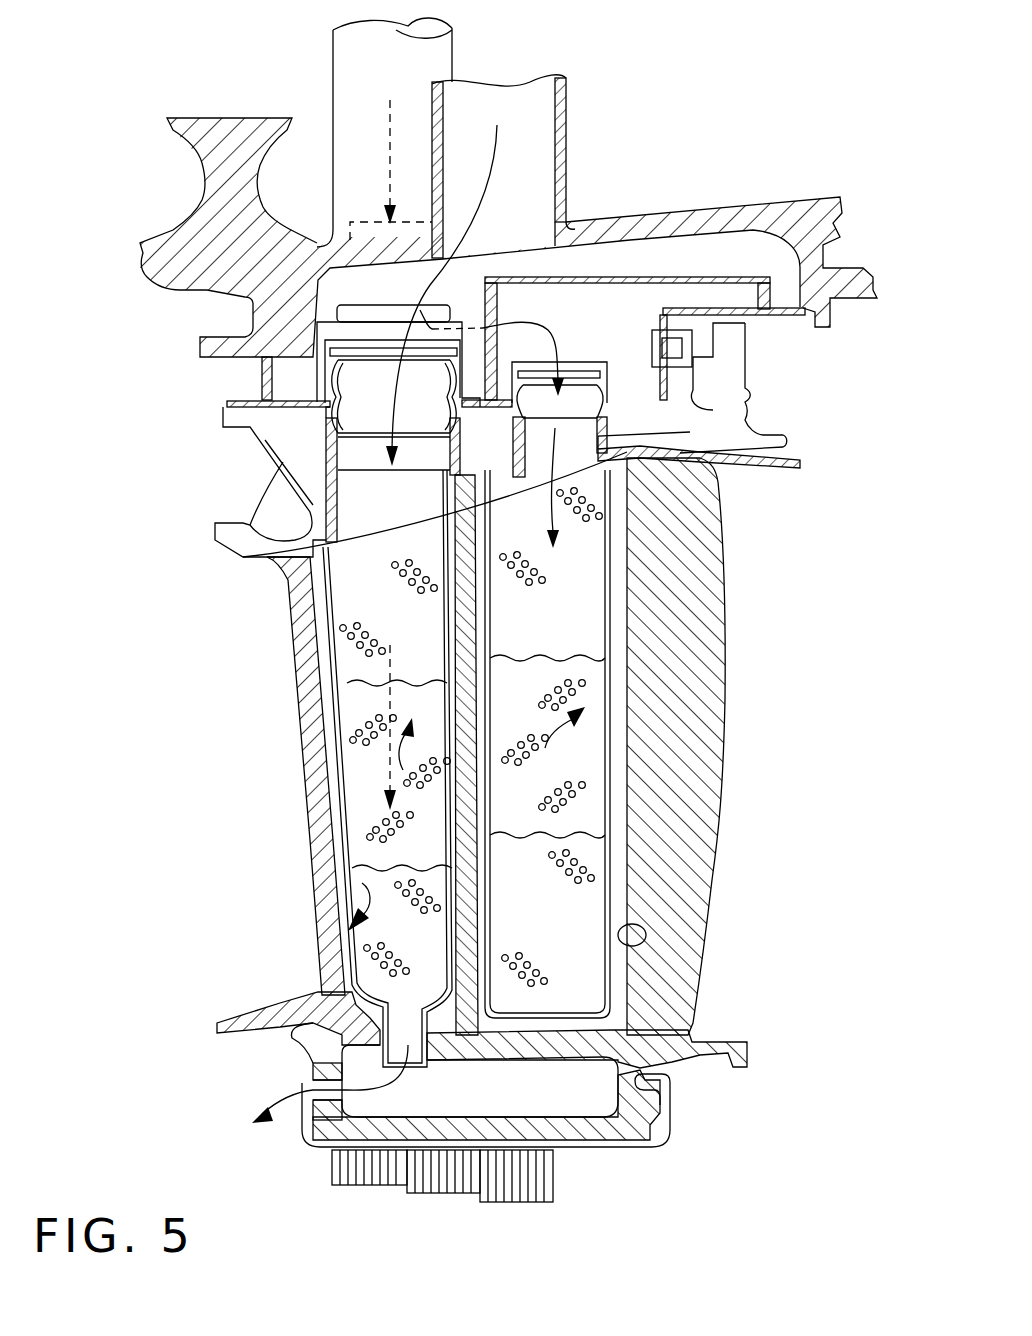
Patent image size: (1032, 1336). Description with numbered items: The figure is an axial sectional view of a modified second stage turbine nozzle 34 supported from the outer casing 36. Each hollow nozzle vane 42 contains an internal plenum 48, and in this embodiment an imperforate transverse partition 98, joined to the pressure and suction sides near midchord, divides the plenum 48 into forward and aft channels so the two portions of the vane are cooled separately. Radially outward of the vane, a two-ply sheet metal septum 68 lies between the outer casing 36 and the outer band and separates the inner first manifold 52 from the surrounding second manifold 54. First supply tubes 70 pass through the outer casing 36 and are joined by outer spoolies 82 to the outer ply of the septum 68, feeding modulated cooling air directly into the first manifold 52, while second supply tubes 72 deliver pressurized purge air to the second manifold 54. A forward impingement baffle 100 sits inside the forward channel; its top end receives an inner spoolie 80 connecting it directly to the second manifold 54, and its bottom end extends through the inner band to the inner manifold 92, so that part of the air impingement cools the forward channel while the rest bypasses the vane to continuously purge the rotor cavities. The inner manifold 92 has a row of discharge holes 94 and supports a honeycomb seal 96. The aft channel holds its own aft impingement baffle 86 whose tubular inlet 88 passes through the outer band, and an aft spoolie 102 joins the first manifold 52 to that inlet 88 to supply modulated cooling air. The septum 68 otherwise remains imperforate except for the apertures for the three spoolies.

The second stage turbine nozzle 34 is at (822, 385).
The outer casing 36 is at (712, 210).
The nozzle vane 42 is at (727, 698).
The plenum 48 is at (630, 945).
The first manifold 52 is at (611, 324).
The second manifold 54 is at (754, 267).
The septum 68 is at (637, 278).
The first supply tube 70 is at (333, 72).
The second supply tube 72 is at (567, 118).
The inner spoolie 80 is at (337, 390).
The outer spoolie 82 is at (340, 285).
The aft impingement baffle 86 is at (612, 853).
The inlet 88 is at (612, 454).
The inner manifold 92 is at (497, 1101).
The discharge holes 94 is at (323, 1078).
The honeycomb seal 96 is at (548, 1203).
The partition 98 is at (480, 642).
The forward impingement baffle 100 is at (334, 771).
The aft spoolie 102 is at (588, 417).